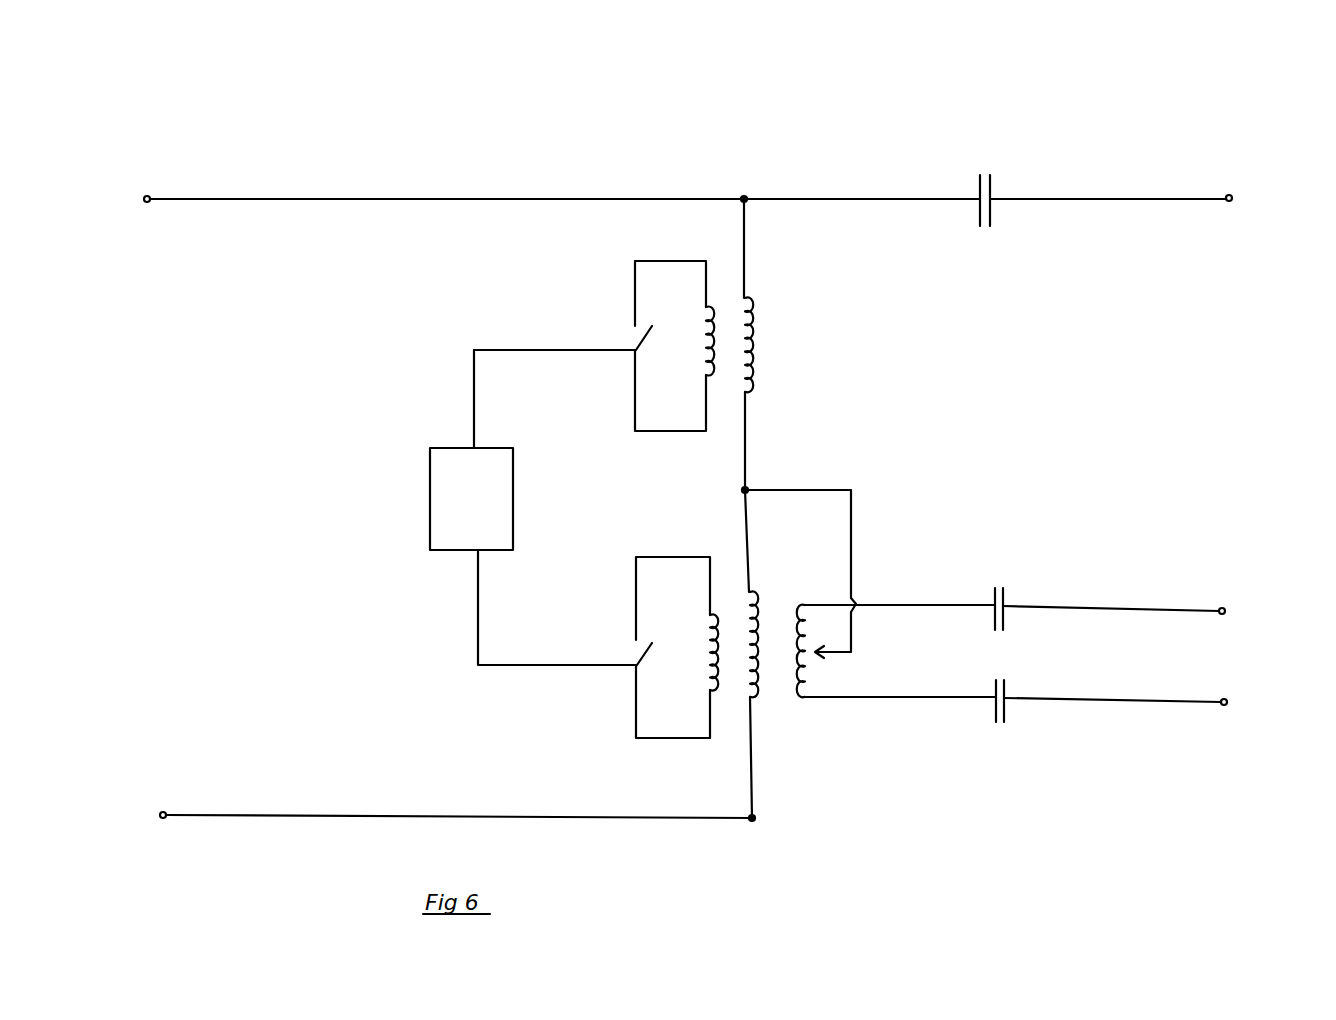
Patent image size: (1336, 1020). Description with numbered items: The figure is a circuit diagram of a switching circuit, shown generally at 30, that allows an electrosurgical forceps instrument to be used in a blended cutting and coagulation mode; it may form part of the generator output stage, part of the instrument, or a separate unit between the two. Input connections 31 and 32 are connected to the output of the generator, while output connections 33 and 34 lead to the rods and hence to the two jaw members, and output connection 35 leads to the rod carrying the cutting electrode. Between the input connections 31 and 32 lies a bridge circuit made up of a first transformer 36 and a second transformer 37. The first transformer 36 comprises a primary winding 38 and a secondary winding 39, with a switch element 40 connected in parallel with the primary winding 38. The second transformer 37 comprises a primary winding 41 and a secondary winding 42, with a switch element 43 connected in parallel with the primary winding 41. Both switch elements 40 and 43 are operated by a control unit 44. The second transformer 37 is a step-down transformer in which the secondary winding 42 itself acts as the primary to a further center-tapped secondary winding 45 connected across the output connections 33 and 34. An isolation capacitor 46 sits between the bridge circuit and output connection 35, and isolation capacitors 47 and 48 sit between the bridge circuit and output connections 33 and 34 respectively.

The circuit 30 is at (564, 139).
The input connection 31 is at (138, 185).
The input connection 32 is at (159, 830).
The output connection 33 is at (1236, 602).
The output connection 34 is at (1238, 708).
The output connection 35 is at (1233, 183).
The first transformer 36 is at (780, 262).
The second transformer 37 is at (820, 760).
The primary winding 38 is at (702, 328).
The secondary winding 39 is at (758, 350).
The switch element 40 is at (616, 335).
The primary winding 41 is at (701, 631).
The secondary winding 42 is at (762, 620).
The switch element 43 is at (622, 680).
The control unit 44 is at (440, 508).
The center-tapped secondary winding 45 is at (818, 688).
The isolation capacitor 46 is at (998, 175).
The isolation capacitor 47 is at (1015, 580).
The isolation capacitor 48 is at (1010, 730).